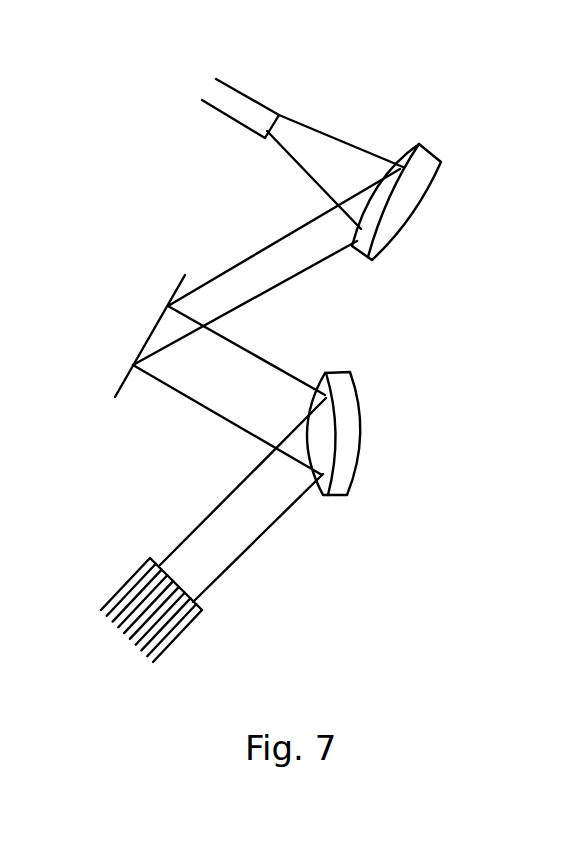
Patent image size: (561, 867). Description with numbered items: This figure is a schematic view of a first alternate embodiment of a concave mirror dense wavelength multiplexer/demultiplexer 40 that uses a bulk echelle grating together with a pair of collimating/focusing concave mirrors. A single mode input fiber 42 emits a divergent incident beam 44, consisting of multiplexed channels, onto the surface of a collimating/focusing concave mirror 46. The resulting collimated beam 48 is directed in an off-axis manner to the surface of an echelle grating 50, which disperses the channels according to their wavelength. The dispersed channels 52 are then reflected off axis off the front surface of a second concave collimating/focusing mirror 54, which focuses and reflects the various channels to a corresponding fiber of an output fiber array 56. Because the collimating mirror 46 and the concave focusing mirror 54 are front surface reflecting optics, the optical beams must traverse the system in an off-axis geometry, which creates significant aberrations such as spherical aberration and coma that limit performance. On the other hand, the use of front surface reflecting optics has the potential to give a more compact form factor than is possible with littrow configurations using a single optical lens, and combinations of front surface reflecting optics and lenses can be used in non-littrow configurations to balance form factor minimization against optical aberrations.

The concave mirror dense wavelength multiplexer/demultiplexer 40 is at (370, 55).
The single mode input fiber 42 is at (238, 105).
The divergent incident beam 44 is at (325, 140).
The collimating/focusing concave mirror 46 is at (436, 154).
The collimated beam 48 is at (315, 258).
The echelle grating 50 is at (162, 312).
The dispersed channels 52 is at (243, 348).
The concave collimating/focusing mirror 54 is at (347, 407).
The output fiber array 56 is at (188, 629).